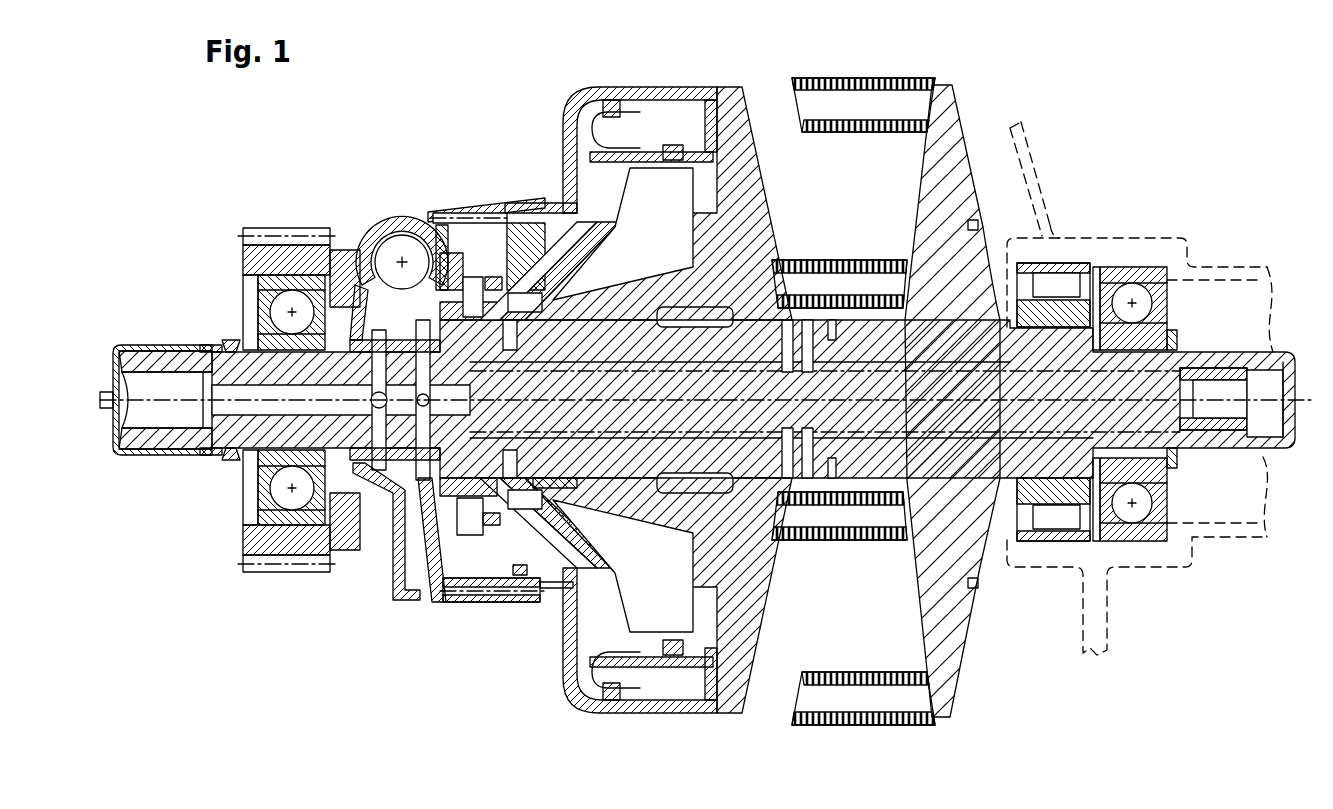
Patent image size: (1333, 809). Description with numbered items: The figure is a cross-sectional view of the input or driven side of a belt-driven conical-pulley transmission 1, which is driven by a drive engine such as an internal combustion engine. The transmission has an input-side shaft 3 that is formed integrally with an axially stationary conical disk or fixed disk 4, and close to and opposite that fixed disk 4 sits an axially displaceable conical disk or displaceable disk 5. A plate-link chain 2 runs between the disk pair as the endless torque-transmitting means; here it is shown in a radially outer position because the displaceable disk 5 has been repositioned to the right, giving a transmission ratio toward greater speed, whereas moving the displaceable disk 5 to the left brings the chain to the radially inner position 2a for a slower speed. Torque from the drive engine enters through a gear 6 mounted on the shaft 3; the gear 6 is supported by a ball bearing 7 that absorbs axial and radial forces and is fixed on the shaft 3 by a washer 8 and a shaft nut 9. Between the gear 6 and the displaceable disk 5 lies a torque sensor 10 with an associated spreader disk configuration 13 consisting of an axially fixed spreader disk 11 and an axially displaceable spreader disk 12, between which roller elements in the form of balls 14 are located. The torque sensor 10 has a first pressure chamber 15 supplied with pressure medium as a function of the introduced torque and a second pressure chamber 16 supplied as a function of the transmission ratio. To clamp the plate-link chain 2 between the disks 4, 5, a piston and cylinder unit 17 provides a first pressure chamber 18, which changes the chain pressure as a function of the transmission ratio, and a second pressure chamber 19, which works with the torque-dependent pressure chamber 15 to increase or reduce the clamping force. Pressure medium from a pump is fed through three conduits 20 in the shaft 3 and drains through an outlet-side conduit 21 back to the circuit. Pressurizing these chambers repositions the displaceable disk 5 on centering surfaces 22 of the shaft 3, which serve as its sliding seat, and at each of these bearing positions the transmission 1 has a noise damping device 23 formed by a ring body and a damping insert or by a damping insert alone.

The belt-driven conical-pulley transmission 1 is at (260, 603).
The plate-link chain 2 is at (878, 78).
The radially inner position of the plate-link chain 2a is at (858, 260).
The shaft 3 is at (150, 435).
The fixed disk 4 is at (947, 115).
The displaceable disk 5 is at (752, 195).
The gear 6 is at (255, 232).
The ball bearing 7 is at (247, 513).
The washer 8 is at (330, 300).
The shaft nut 9 is at (233, 343).
The torque sensor 10 is at (426, 238).
The axially fixed spreader disk 11 is at (373, 222).
The axially displaceable spreader disk 12 is at (487, 210).
The spreader disk configuration 13 is at (385, 605).
The balls 14 is at (418, 258).
The first pressure chamber of the torque sensor 15 is at (470, 522).
The second pressure chamber of the torque sensor 16 is at (547, 228).
The piston and cylinder unit 17 is at (545, 663).
The first pressure chamber of the piston and cylinder unit 18 is at (628, 637).
The second pressure chamber of the piston and cylinder unit 19 is at (522, 310).
The conduits 20 is at (892, 385).
The conduit on the outlet side 21 is at (195, 350).
The centering surfaces 22 is at (842, 440).
The noise damping device 23 is at (1110, 293).